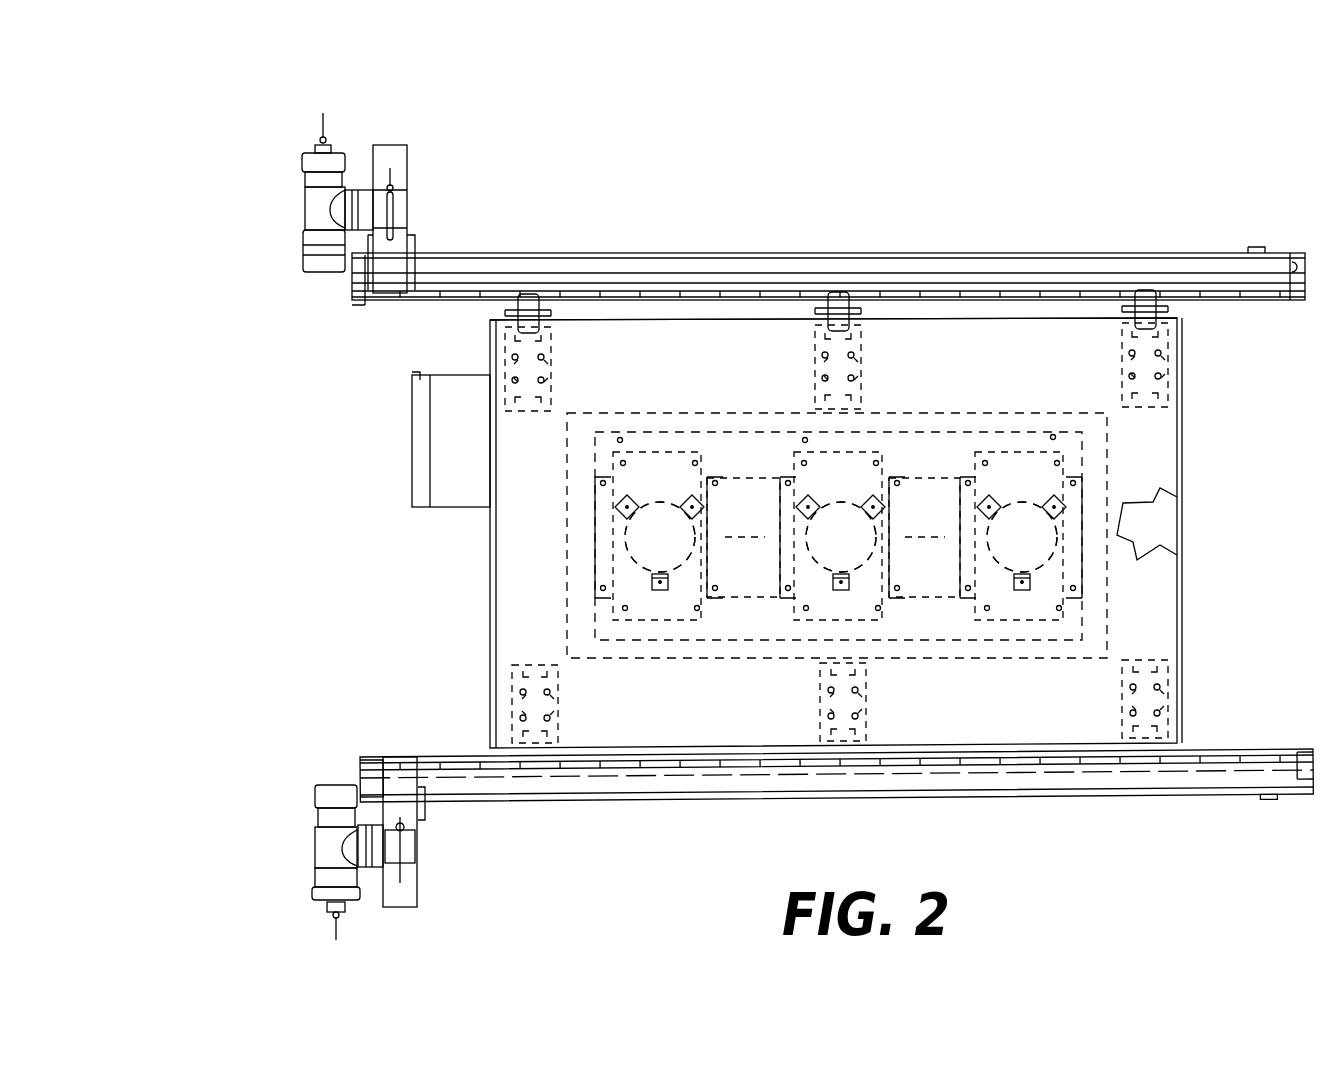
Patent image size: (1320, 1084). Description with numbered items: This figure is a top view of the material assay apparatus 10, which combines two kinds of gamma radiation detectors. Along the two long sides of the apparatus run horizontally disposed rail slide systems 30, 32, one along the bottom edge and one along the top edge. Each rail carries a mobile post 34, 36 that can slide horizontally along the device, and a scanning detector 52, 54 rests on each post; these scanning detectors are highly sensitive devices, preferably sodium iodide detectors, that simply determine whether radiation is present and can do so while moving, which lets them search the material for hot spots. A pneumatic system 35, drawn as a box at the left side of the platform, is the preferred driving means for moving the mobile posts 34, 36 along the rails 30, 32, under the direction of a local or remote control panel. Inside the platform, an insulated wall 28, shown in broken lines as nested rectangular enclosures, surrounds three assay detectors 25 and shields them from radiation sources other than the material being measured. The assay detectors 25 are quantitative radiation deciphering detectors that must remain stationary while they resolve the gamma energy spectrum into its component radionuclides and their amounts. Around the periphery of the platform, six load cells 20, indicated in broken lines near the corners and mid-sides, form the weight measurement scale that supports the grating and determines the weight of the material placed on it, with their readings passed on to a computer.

The material assay apparatus 10 is at (236, 703).
The load cells 20 is at (535, 368).
The assay detectors 25 is at (841, 537).
The insulated wall 28 is at (662, 501).
The rail slide system 30 is at (748, 797).
The rail slide system 32 is at (765, 251).
The mobile post 34 is at (418, 910).
The pneumatic system 35 is at (410, 437).
The mobile post 36 is at (412, 142).
The scanning detector 52 is at (311, 828).
The scanning detector 54 is at (303, 218).